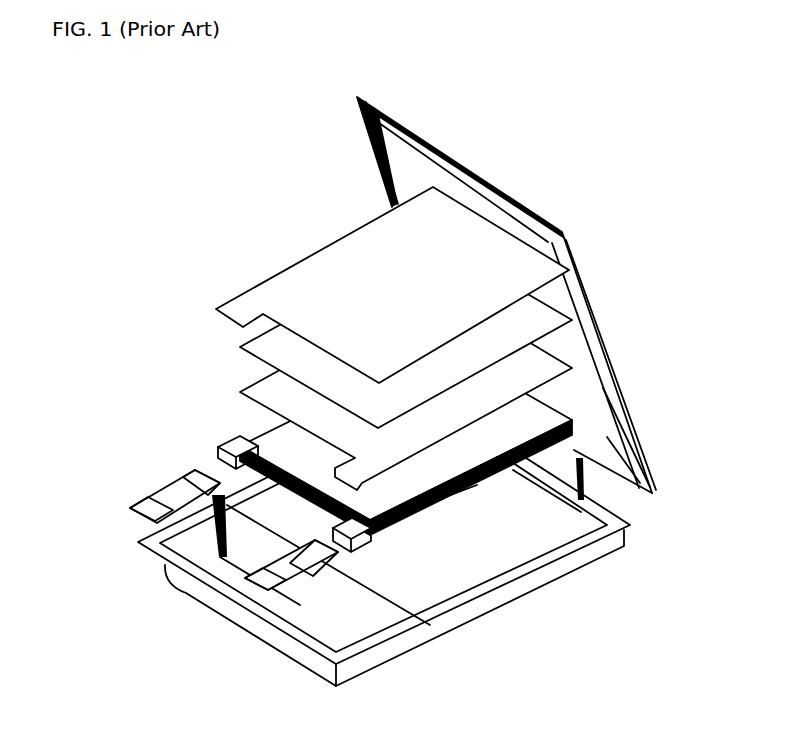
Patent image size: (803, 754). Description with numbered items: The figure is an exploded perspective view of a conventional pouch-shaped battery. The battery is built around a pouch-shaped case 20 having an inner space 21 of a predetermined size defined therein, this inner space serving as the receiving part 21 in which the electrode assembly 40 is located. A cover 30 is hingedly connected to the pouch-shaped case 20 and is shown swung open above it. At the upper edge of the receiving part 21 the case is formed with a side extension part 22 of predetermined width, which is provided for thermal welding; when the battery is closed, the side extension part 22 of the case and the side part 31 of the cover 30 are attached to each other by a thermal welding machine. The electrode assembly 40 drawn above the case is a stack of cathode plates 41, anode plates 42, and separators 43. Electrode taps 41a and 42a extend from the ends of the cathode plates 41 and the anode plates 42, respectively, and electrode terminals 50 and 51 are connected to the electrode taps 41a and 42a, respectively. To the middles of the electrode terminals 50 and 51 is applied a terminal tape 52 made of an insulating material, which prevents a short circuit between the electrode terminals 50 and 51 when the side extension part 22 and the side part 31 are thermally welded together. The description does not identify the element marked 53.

The pouch-shaped case 20 is at (290, 655).
The inner space (receiving part) 21 is at (410, 587).
The side extension part 22 is at (198, 604).
The cover 30 is at (583, 357).
The side part 31 is at (483, 180).
The electrode assembly 40 is at (347, 426).
The cathode plates 41 is at (326, 248).
The electrode tap 41a is at (232, 440).
The anode plates 42 is at (347, 475).
The electrode tap 42a is at (378, 542).
The separators 43 is at (238, 350).
The electrode terminal 50 is at (152, 520).
The electrode terminal 51 is at (278, 587).
The terminal tape 52 is at (140, 498).
The second terminal 53 is at (300, 575).